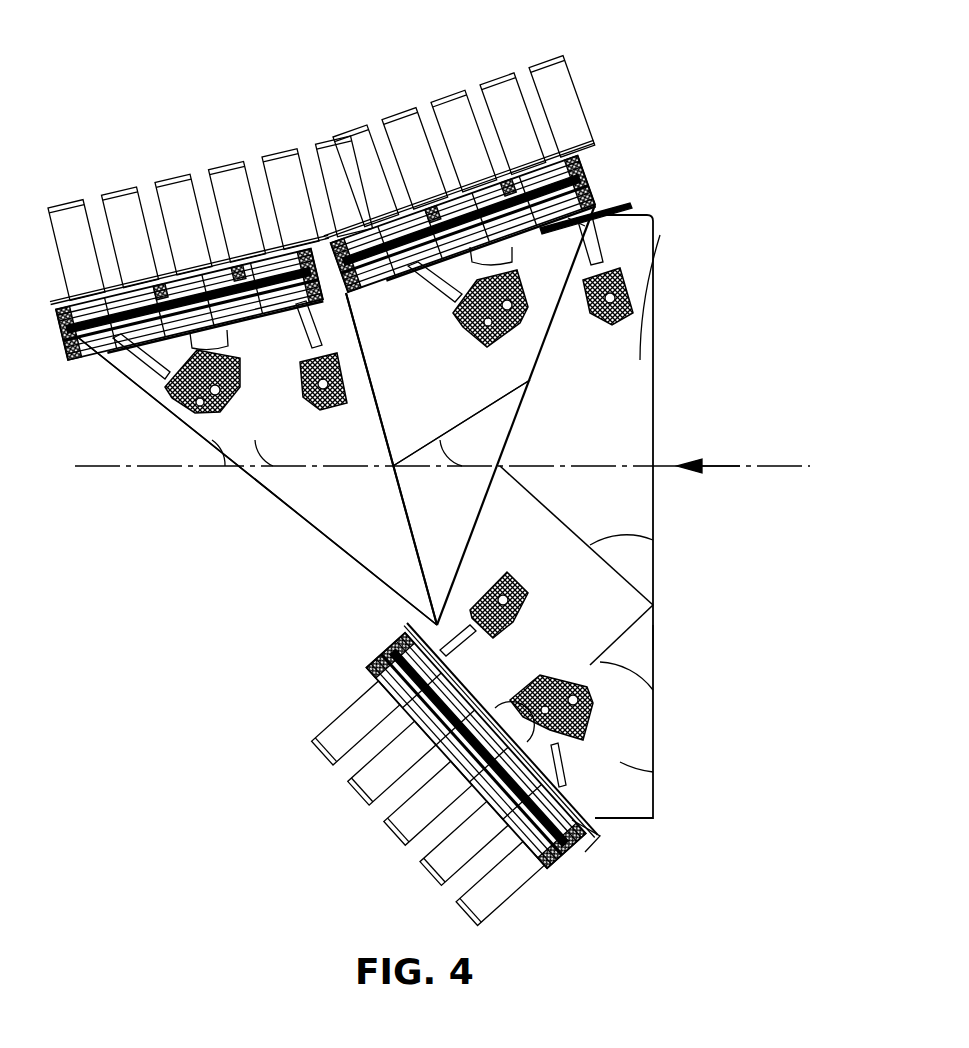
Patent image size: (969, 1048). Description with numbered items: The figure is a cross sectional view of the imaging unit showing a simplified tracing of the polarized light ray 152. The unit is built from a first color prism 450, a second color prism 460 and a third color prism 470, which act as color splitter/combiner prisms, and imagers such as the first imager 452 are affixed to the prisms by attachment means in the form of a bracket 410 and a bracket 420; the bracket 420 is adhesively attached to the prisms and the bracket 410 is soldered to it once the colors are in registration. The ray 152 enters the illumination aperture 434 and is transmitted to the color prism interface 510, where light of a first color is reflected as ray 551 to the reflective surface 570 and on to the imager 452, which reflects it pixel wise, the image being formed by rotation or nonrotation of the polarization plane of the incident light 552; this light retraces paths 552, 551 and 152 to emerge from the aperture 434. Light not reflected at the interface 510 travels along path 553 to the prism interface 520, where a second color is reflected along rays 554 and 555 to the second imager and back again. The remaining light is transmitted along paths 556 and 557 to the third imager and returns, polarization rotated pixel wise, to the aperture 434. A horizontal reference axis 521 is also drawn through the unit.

The polarized light ray 152 is at (712, 467).
The bracket 410 is at (597, 250).
The bracket 420 is at (532, 262).
The illumination aperture 434 is at (638, 345).
The first color prism 450 is at (620, 762).
The first imager 452 is at (588, 845).
The second color prism 460 is at (446, 367).
The third color prism 470 is at (313, 493).
The color prism interface 510 is at (530, 376).
The prism interface 520 is at (408, 520).
The horizontal axis 521 is at (782, 465).
The ray 551 is at (590, 545).
The incident light path 552 is at (594, 656).
The transmitted light path 553 is at (466, 470).
The ray 554 is at (476, 424).
The ray 555 is at (600, 182).
The transmitted light path 556 is at (273, 464).
The transmitted light path 557 is at (212, 440).
The reflective surface 570 is at (655, 644).